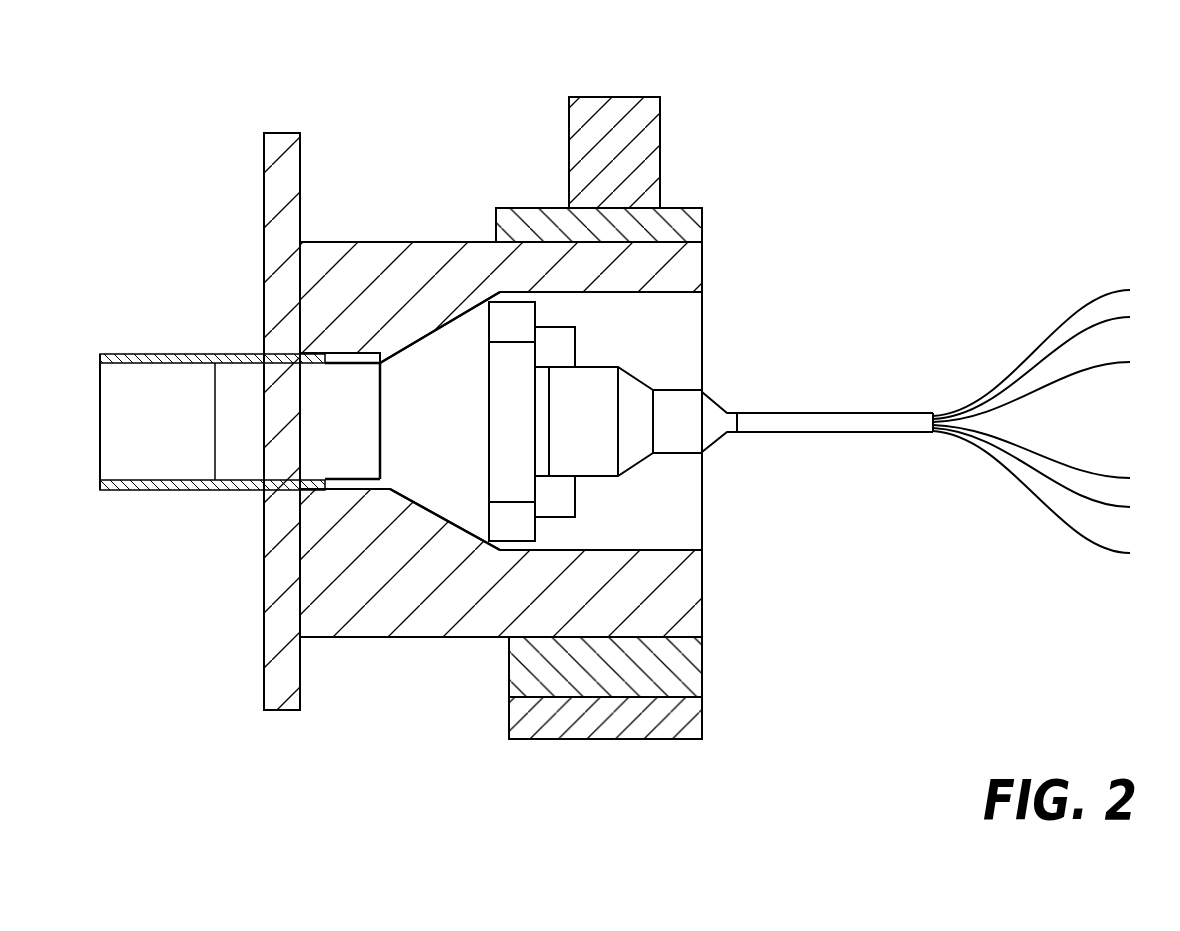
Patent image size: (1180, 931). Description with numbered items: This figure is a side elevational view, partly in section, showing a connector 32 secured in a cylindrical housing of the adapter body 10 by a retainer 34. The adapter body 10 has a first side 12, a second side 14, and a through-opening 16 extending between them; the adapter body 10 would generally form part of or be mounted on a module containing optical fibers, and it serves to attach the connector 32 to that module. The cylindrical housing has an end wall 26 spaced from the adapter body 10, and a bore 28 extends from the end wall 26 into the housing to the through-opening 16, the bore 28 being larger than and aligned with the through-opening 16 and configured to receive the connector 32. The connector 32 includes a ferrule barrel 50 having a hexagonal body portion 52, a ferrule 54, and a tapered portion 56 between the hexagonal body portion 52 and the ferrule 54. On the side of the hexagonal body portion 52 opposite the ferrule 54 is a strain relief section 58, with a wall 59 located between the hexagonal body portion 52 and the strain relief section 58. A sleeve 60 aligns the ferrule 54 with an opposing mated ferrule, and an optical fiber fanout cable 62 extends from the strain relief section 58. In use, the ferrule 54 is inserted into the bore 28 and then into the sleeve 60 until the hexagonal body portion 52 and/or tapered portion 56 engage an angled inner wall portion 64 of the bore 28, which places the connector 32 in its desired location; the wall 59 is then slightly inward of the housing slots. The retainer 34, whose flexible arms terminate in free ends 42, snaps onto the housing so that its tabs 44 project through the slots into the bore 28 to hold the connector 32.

The adapter body 10 is at (481, 371).
The first side 12 is at (540, 334).
The second side 14 is at (263, 153).
The through-opening 16 is at (240, 360).
The end wall 26 is at (702, 582).
The bore 28 is at (675, 307).
The connector 32 is at (914, 364).
The retainer 34 is at (660, 133).
The free end 42 is at (702, 722).
The tab 44 is at (558, 495).
The ferrule barrel 50 is at (489, 466).
The hexagonal body portion 52 is at (522, 530).
The ferrule 54 is at (233, 462).
The tapered portion 56 is at (400, 462).
The strain relief section 58 is at (673, 390).
The wall 59 is at (537, 313).
The sleeve 60 is at (142, 485).
The optical fiber fanout cable 62 is at (913, 420).
The angled inner wall portion 64 is at (450, 317).